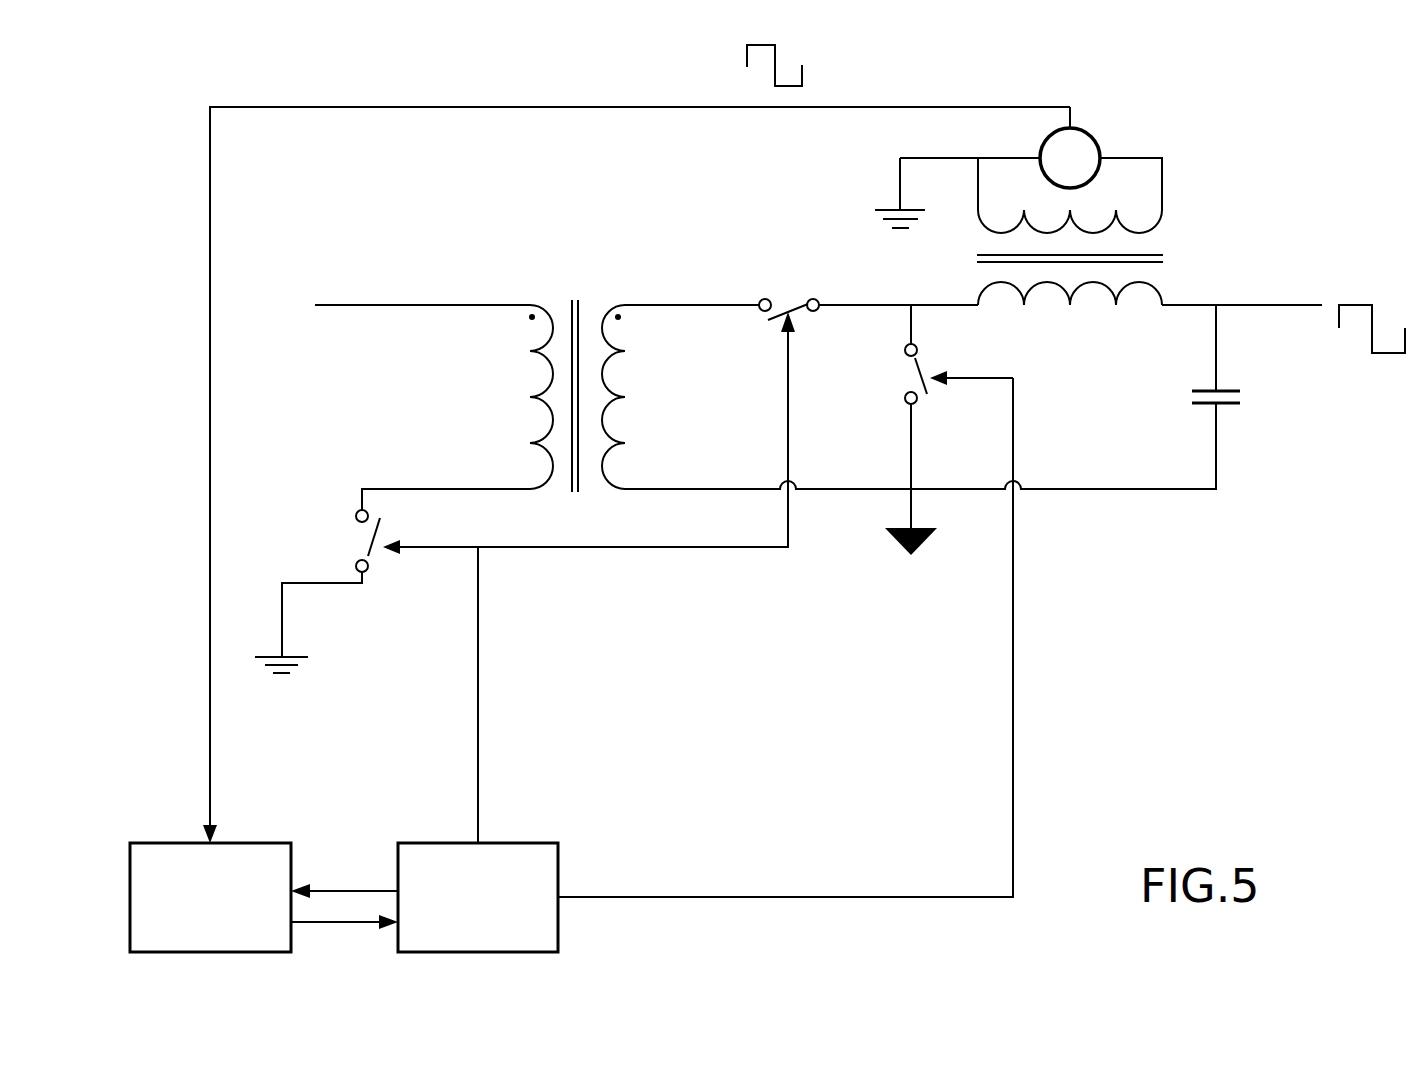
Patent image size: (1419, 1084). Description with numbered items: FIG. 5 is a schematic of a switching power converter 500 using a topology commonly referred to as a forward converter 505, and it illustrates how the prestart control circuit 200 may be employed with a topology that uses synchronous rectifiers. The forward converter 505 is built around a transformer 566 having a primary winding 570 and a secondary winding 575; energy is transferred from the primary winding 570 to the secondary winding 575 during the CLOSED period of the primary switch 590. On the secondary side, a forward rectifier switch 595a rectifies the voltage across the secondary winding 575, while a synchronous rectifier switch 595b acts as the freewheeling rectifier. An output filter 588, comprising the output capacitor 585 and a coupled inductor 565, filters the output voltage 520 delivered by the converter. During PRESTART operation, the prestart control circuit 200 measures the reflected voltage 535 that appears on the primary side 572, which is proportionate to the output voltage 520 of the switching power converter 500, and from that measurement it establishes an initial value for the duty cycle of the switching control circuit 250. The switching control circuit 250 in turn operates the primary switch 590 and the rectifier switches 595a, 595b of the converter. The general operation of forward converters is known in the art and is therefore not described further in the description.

The switching power converter 500 is at (1312, 541).
The forward converter 505 is at (418, 248).
The output voltage 520 is at (1352, 303).
The reflected voltage 535 is at (746, 62).
The coupled inductor 565 is at (1160, 256).
The transformer 566 is at (522, 203).
The primary winding 570 is at (532, 303).
The primary side 572 is at (899, 188).
The secondary winding 575 is at (616, 302).
The output capacitor 585 is at (1216, 425).
The output filter 588 is at (1116, 364).
The primary switch 590 is at (370, 550).
The forward rectifier switch 595a is at (790, 303).
The synchronous rectifier switch 595b is at (905, 395).
The prestart control circuit 200 is at (148, 843).
The switching control circuit 250 is at (428, 843).